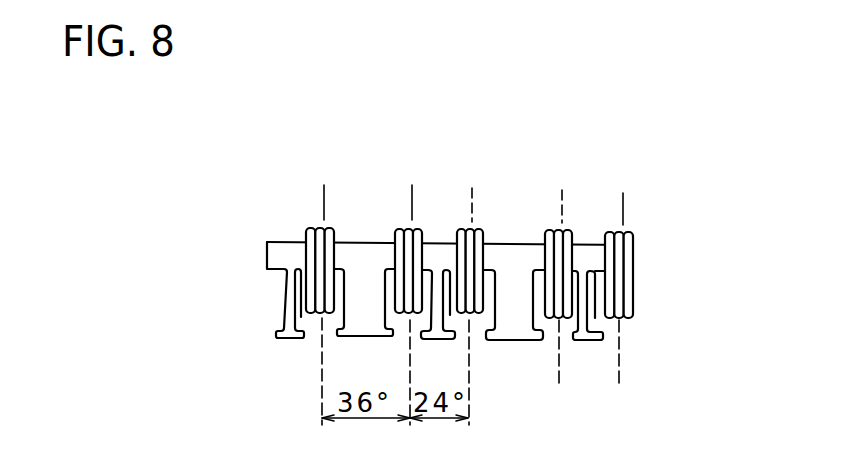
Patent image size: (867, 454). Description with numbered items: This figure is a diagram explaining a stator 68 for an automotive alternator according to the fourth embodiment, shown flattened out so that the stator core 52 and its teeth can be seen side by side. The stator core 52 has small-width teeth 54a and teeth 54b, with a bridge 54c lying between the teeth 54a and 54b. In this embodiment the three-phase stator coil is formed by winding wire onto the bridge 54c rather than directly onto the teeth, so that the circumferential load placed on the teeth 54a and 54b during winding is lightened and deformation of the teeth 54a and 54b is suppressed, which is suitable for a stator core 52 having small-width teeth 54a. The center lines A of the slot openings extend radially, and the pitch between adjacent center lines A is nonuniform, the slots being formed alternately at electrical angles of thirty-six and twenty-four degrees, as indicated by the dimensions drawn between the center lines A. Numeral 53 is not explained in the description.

The stator core 52 is at (285, 313).
The coil 53 is at (308, 226).
The tooth 54a is at (517, 332).
The tooth 54b is at (590, 340).
The bridge 54c is at (585, 260).
The stator 68 is at (643, 290).
The center line A is at (413, 197).